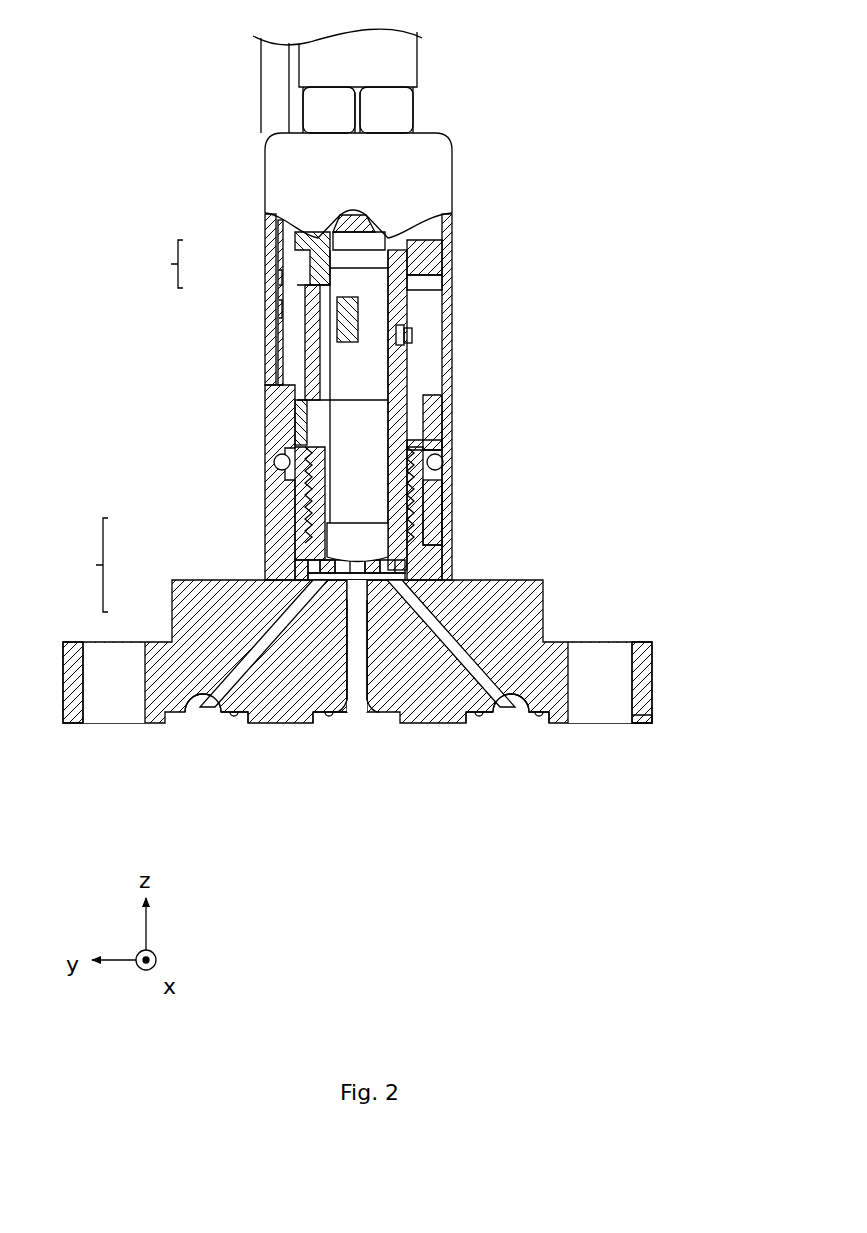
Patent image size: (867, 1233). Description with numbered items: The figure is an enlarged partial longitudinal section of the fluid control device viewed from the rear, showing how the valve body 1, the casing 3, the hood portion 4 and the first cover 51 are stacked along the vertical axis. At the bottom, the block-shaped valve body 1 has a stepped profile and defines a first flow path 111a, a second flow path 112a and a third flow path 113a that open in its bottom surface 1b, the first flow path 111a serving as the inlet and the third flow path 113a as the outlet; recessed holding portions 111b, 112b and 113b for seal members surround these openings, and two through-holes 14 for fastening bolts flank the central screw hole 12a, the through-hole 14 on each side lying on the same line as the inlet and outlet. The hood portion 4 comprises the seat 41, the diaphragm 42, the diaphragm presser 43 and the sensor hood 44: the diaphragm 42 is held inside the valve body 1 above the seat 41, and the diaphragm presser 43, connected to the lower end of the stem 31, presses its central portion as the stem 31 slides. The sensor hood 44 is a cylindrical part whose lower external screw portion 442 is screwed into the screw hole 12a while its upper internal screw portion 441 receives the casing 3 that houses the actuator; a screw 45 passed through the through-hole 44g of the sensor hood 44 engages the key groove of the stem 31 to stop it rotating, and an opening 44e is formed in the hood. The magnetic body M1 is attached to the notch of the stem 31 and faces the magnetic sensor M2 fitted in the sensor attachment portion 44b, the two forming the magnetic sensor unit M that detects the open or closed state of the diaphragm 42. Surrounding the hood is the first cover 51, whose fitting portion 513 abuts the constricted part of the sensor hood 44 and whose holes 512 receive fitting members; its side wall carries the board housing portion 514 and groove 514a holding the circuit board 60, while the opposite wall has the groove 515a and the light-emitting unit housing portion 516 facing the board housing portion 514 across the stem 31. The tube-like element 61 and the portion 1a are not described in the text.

The valve body 1 is at (545, 582).
The threaded attachment portion of base 1a is at (442, 505).
The bottom surface 1b is at (652, 723).
The casing 3 is at (418, 57).
The hood portion 4 is at (90, 565).
The screw hole 12a is at (390, 535).
The through-hole 14 is at (145, 712).
The stem 31 is at (345, 298).
The seat 41 is at (300, 575).
The diaphragm 42 is at (330, 574).
The diaphragm presser 43 is at (312, 562).
The sensor hood 44 is at (305, 520).
The sensor attachment portion 44b is at (305, 350).
The opening 44e is at (298, 418).
The through-hole 44g is at (400, 328).
The screw 45 is at (408, 345).
The first cover 51 is at (453, 142).
The circuit board 60 is at (274, 222).
The supply tube 61 is at (262, 72).
The first flow path 111a is at (203, 712).
The recessed holding portion 111b is at (235, 716).
The second flow path 112a is at (328, 716).
The recessed holding portion 112b is at (375, 716).
The third flow path 113a is at (478, 716).
The recessed holding portion 113b is at (512, 712).
The screw portion 441 is at (410, 232).
The screw portion 442 is at (300, 486).
The hole 512 is at (274, 462).
The fitting portion 513 is at (445, 442).
The board housing portion 514 is at (265, 372).
The groove 514a is at (268, 392).
The groove 515a is at (445, 270).
The light-emitting unit housing portion 516 is at (425, 255).
The magnetic sensor unit M is at (160, 264).
The magnetic body M1 is at (282, 278).
The magnetic sensor M2 is at (282, 312).